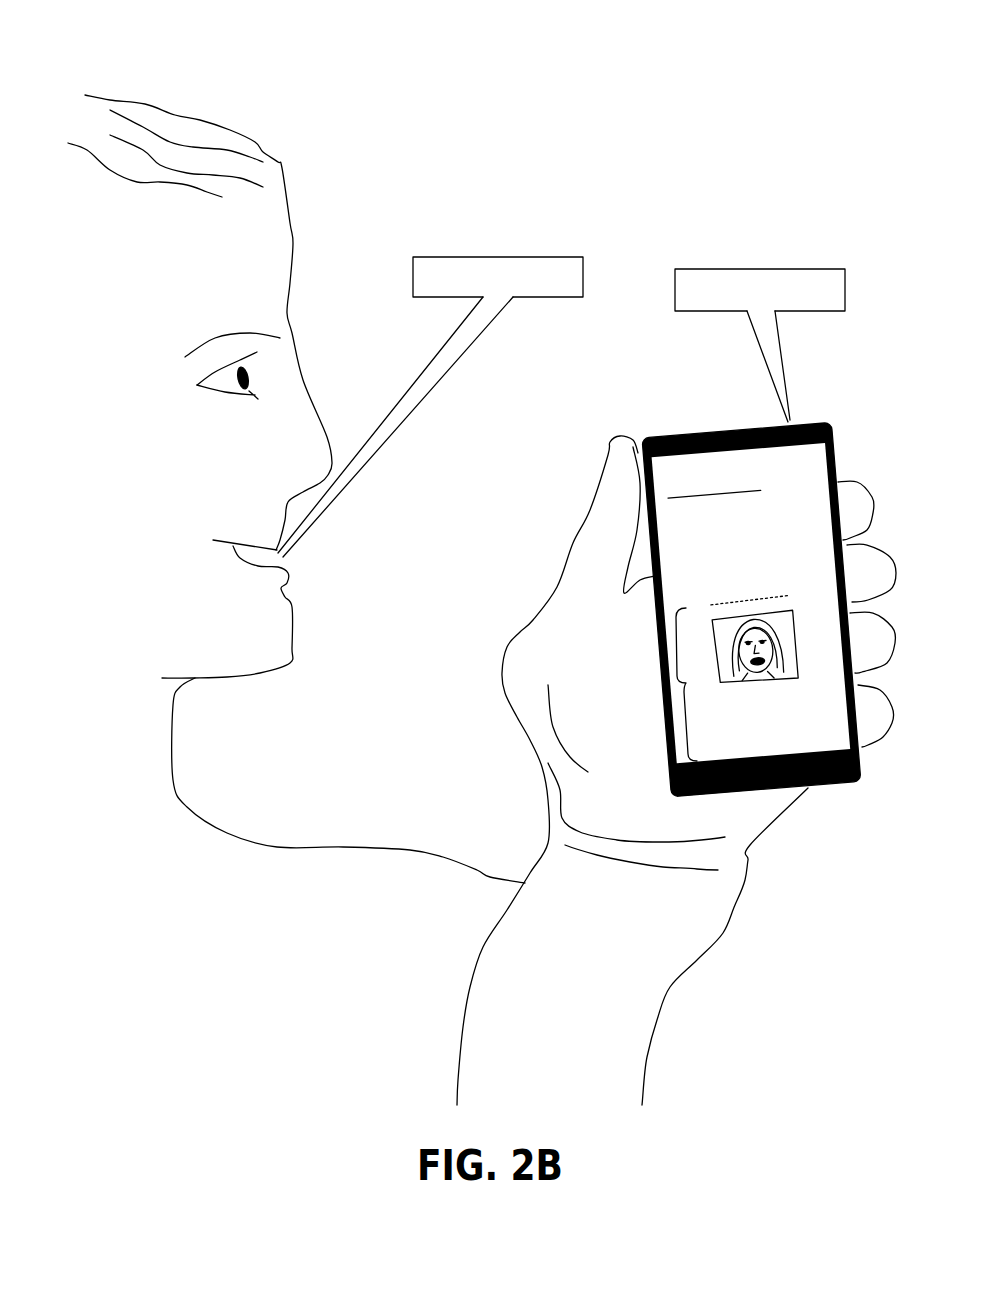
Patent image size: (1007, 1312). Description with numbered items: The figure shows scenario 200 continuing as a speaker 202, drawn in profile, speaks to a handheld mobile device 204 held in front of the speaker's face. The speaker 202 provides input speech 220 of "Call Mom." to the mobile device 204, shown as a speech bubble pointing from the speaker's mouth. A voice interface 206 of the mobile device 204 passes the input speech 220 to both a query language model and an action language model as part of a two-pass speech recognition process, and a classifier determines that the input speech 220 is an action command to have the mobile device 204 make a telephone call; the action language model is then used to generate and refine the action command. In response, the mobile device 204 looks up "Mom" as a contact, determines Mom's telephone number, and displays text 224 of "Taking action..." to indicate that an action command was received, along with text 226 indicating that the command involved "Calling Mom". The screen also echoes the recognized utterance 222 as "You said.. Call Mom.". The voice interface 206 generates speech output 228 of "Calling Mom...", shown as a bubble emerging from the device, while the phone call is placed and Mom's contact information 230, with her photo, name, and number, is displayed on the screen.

The scenario 200 is at (856, 32).
The speaker 202 is at (253, 142).
The mobile device 204 is at (676, 433).
The voice interface 206 is at (722, 428).
The input speech 220 is at (458, 257).
The transcription of the utterance 222 is at (667, 495).
The text 224 is at (667, 516).
The text 226 is at (670, 543).
The speech output 228 is at (752, 269).
The contact information 230 is at (670, 681).